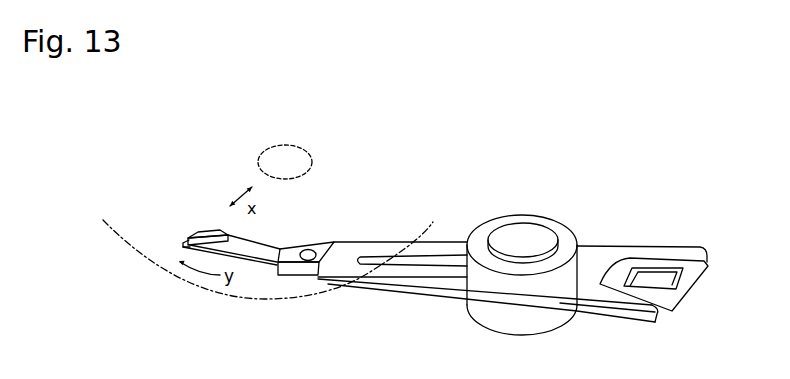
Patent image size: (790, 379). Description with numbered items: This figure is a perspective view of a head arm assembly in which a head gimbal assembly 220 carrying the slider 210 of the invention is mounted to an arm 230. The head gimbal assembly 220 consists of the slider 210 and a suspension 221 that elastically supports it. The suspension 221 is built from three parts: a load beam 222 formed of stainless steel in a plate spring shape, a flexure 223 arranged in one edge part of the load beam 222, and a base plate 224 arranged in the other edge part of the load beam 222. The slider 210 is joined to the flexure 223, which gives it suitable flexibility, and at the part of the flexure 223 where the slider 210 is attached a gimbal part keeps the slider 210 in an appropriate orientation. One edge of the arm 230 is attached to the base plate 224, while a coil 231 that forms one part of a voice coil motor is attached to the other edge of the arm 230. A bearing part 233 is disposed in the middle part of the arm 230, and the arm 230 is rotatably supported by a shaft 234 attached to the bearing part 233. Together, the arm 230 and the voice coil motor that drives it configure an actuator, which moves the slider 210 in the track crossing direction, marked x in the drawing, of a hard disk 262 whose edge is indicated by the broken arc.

The slider 210 is at (208, 232).
The head gimbal assembly 220 is at (271, 277).
The suspension 221 is at (272, 217).
The load beam 222 is at (289, 243).
The flexure 223 is at (185, 241).
The base plate 224 is at (330, 250).
The arm 230 is at (385, 283).
The coil 231 is at (697, 296).
The bearing part 233 is at (480, 230).
The shaft 234 is at (532, 230).
The hard disk 262 is at (215, 293).